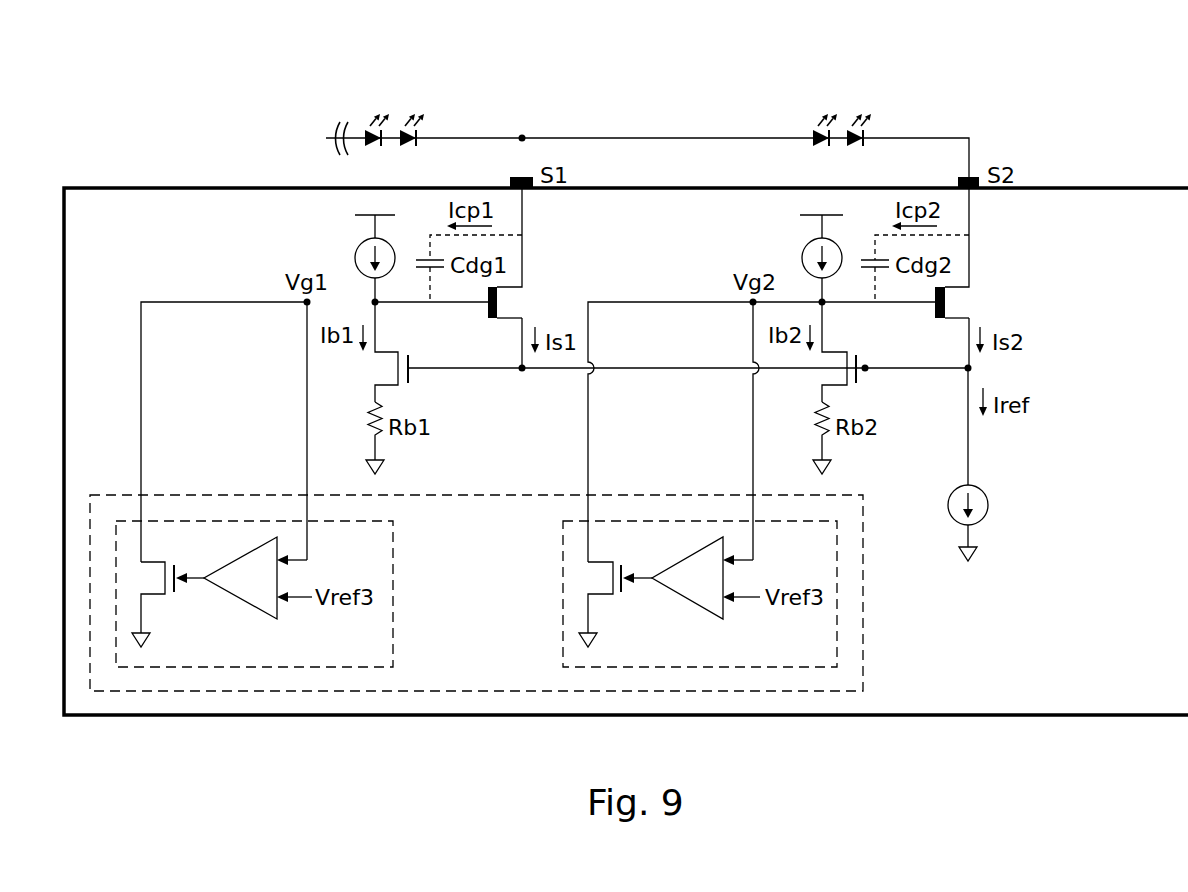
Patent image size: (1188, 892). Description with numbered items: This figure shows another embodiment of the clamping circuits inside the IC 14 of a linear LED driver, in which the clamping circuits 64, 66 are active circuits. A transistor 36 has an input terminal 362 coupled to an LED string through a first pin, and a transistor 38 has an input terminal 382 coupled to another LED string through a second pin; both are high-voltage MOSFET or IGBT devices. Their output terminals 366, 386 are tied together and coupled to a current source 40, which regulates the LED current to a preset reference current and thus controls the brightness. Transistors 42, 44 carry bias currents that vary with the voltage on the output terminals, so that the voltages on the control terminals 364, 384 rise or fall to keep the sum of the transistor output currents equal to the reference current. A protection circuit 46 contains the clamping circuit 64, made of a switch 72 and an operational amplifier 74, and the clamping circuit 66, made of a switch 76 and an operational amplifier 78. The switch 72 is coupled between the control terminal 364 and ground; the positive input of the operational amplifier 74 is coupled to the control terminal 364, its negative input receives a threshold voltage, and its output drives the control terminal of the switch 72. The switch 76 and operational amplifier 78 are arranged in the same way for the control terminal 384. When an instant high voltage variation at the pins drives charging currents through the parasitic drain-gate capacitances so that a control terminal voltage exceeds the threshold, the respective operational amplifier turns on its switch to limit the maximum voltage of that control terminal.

The IC 14 is at (1128, 188).
The transistor 36 is at (527, 297).
The input terminal 362 is at (525, 205).
The control terminal 364 is at (458, 305).
The output terminal 366 is at (522, 375).
The transistor 38 is at (974, 297).
The input terminal 382 is at (972, 205).
The control terminal 384 is at (905, 305).
The output terminal 386 is at (968, 375).
The transistor 42 is at (361, 387).
The transistor 44 is at (809, 387).
The current source 40 is at (953, 490).
The protection circuit 46 is at (479, 495).
The clamping circuit 64 is at (393, 598).
The clamping circuit 66 is at (563, 596).
The switch 72 is at (185, 554).
The operational amplifier 74 is at (238, 600).
The switch 76 is at (630, 554).
The operational amplifier 78 is at (686, 600).